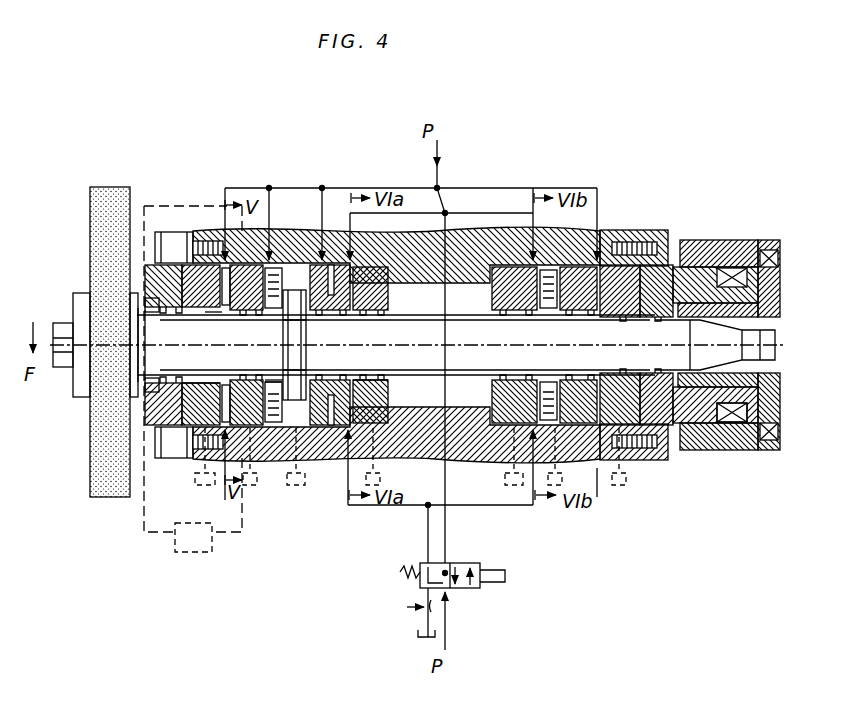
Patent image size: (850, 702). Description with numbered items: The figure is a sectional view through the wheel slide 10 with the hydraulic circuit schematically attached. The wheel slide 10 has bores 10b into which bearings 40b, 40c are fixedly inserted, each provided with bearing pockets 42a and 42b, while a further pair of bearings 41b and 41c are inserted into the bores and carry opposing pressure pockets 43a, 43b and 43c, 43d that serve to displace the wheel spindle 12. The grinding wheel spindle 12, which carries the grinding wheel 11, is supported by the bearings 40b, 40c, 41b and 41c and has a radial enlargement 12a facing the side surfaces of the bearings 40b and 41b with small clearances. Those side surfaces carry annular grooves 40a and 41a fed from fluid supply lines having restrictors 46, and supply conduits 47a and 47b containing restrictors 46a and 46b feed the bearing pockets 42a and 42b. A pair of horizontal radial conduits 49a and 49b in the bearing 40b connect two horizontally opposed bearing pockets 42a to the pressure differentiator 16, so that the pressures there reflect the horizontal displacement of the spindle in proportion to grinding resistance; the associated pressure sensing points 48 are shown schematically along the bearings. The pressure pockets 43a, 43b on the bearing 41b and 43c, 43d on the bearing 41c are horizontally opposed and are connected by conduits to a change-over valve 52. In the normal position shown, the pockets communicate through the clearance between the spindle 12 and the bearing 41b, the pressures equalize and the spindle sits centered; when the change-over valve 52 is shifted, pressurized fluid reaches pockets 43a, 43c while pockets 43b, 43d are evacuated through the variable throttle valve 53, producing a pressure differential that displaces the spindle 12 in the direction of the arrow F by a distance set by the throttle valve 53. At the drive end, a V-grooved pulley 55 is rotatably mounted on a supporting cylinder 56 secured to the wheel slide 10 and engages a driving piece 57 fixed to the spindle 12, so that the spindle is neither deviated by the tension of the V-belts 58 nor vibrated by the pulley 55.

The wheel slide 10 is at (488, 268).
The bore 10b is at (595, 268).
The grinding wheel 11 is at (119, 197).
The wheel spindle 12 is at (440, 345).
The radial enlargement 12a is at (300, 335).
The pressure differentiator 16 is at (204, 524).
The annular groove 40a is at (276, 286).
The bearing 40b is at (188, 278).
The bearing 40c is at (634, 282).
The annular groove 41a is at (321, 276).
The bearing 41b is at (381, 285).
The bearing 41c is at (498, 295).
The bearing pocket 42a is at (203, 383).
The bearing pocket 42b is at (531, 381).
The pressure pocket 43a is at (353, 316).
The pressure pocket 43b is at (357, 389).
The pressure pocket 43c is at (525, 334).
The pressure pocket 43d is at (528, 379).
The restrictor 46 is at (273, 266).
The restrictor 46a is at (268, 386).
The restrictor 46b is at (578, 386).
The supply conduit 47a is at (224, 392).
The supply conduit 47b is at (604, 294).
The pressure sensors 48 is at (194, 472).
The radial conduit 49a is at (216, 293).
The radial conduit 49b is at (279, 379).
The change-over valve 52 is at (482, 569).
The variable throttle valve 53 is at (423, 614).
The V-grooved pulley 55 is at (749, 249).
The supporting cylinder 56 is at (728, 272).
The driving piece 57 is at (783, 288).
The V-belts 58 is at (741, 446).